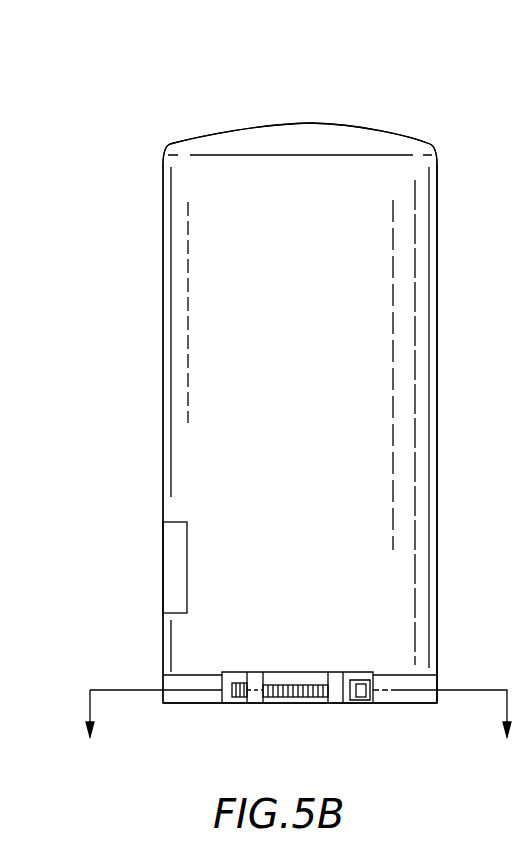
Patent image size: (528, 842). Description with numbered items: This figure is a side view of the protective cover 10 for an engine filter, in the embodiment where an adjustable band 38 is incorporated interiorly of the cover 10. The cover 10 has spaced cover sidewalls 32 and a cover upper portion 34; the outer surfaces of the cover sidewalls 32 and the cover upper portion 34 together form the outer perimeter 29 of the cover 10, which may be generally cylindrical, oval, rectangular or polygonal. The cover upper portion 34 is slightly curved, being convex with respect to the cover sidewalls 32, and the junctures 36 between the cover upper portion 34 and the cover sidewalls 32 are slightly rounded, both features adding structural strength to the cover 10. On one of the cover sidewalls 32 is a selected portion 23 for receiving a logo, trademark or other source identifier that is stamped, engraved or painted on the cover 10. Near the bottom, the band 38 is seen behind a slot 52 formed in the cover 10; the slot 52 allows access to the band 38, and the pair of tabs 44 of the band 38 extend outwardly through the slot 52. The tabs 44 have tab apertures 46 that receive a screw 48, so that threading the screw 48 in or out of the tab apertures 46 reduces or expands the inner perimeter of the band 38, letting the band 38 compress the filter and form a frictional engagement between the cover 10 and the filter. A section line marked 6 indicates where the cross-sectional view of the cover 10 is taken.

The protective cover 10 is at (127, 88).
The cover upper portion 34 is at (362, 128).
The junctures 36 is at (165, 142).
The outer perimeter 29 is at (439, 359).
The cover sidewalls 32 is at (163, 390).
The selected portion 23 is at (182, 522).
The tabs 44 is at (245, 680).
The tab apertures 46 is at (258, 680).
The slot 52 is at (368, 672).
The screw 48 is at (365, 700).
The band 38 is at (425, 703).
The section line 6- 6 is at (297, 727).